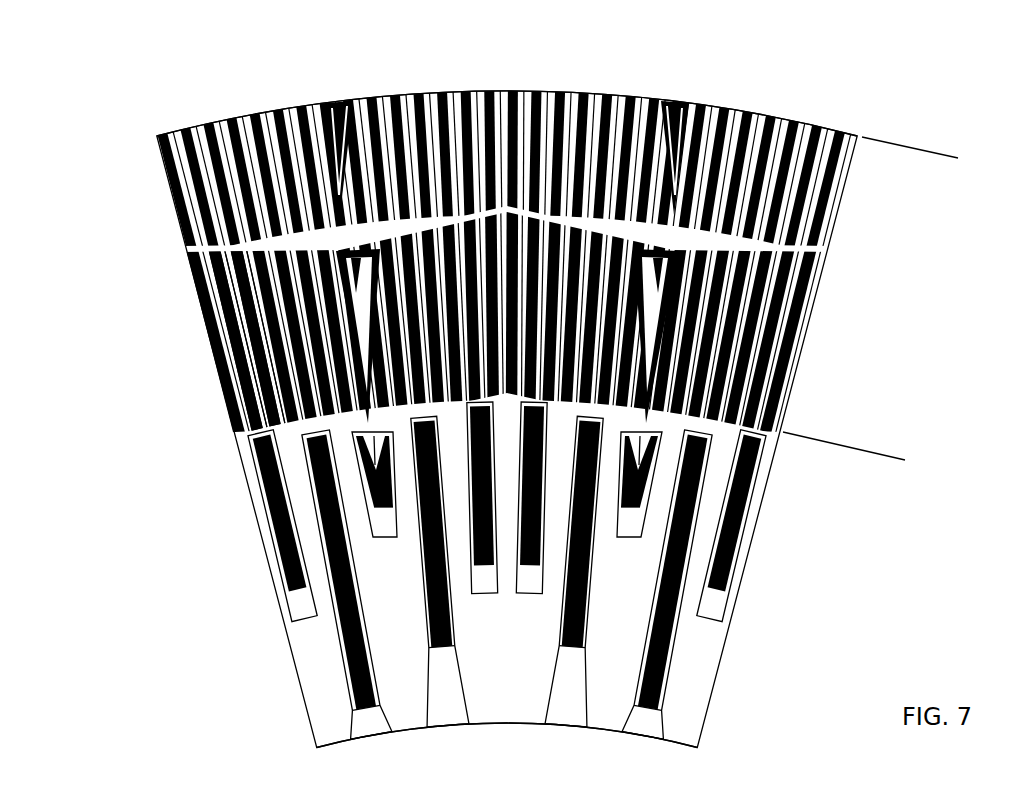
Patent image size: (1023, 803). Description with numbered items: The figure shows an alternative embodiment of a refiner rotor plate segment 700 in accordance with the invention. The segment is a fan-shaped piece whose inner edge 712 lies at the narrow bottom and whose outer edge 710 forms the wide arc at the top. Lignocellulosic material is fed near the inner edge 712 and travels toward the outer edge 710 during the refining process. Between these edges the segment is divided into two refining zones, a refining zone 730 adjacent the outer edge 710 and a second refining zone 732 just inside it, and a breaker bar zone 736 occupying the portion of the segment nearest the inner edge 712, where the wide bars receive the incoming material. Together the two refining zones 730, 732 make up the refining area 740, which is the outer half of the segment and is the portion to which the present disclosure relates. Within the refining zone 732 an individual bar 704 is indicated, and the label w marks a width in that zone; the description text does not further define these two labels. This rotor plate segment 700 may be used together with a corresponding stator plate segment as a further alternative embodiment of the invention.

The rotor plate segment 700 is at (150, 116).
The conductive strip 704 is at (238, 372).
The strip width w is at (267, 393).
The outer edge 710 is at (518, 90).
The inner edge 712 is at (507, 724).
The refining zone 730 is at (546, 173).
The refining zone 732 is at (543, 322).
The breaker bar zone 736 is at (547, 575).
The refining area 740 is at (894, 298).